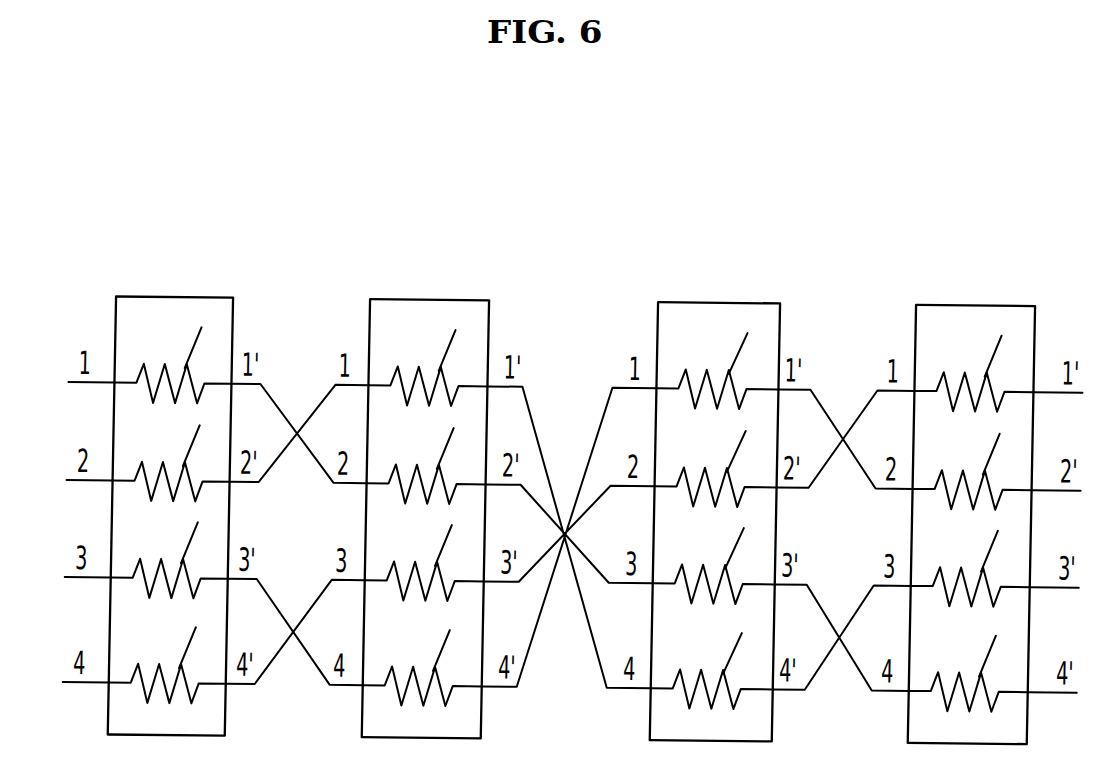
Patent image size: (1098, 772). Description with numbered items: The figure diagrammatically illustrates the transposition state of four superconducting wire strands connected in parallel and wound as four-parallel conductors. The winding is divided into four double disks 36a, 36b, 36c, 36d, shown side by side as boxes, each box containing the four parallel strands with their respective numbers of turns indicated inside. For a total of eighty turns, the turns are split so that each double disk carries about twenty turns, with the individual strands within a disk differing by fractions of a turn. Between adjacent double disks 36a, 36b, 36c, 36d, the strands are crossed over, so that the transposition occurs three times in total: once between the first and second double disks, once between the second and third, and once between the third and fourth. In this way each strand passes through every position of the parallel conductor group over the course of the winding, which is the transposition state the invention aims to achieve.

The double disk 36a is at (177, 296).
The double disk 36b is at (430, 296).
The double disk 36c is at (720, 296).
The double disk 36d is at (975, 296).